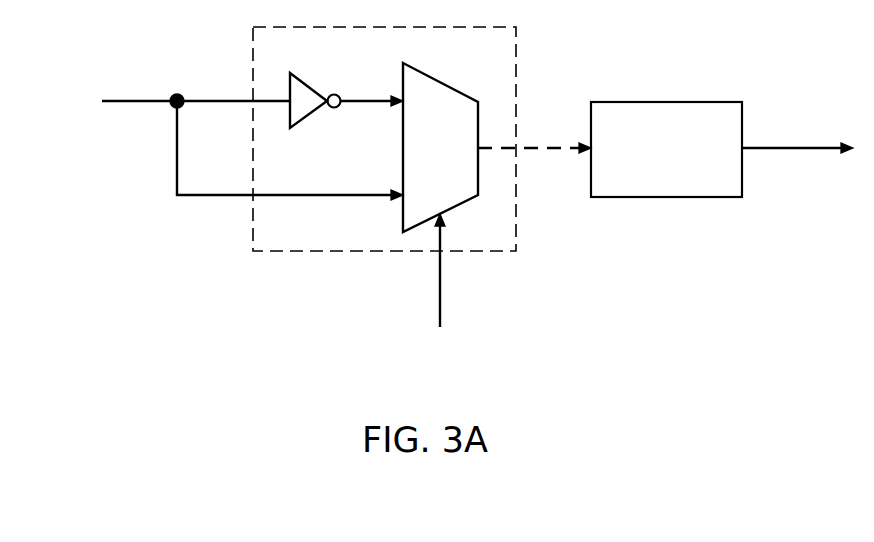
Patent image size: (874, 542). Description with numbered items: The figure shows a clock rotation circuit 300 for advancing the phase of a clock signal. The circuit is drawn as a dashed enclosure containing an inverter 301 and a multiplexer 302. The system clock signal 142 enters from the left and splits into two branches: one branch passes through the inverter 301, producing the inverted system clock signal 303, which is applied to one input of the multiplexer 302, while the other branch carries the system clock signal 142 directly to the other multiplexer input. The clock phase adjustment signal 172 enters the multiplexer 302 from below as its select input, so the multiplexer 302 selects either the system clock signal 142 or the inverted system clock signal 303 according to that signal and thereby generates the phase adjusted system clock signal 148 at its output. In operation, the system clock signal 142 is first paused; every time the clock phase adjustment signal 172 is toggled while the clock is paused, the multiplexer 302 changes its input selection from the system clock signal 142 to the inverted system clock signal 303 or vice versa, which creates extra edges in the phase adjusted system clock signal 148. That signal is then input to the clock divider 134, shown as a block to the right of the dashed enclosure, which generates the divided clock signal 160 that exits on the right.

The system clock signal 142 is at (126, 100).
The clock rotation circuit 300 is at (515, 88).
The inverter 301 is at (303, 77).
The inverted system clock signal 303 is at (368, 106).
The multiplexer 302 is at (465, 92).
The phase adjusted system clock signal 148 is at (537, 148).
The clock divider 134 is at (666, 149).
The divided clock signal 160 is at (780, 148).
The clock phase adjustment signal 172 is at (440, 315).